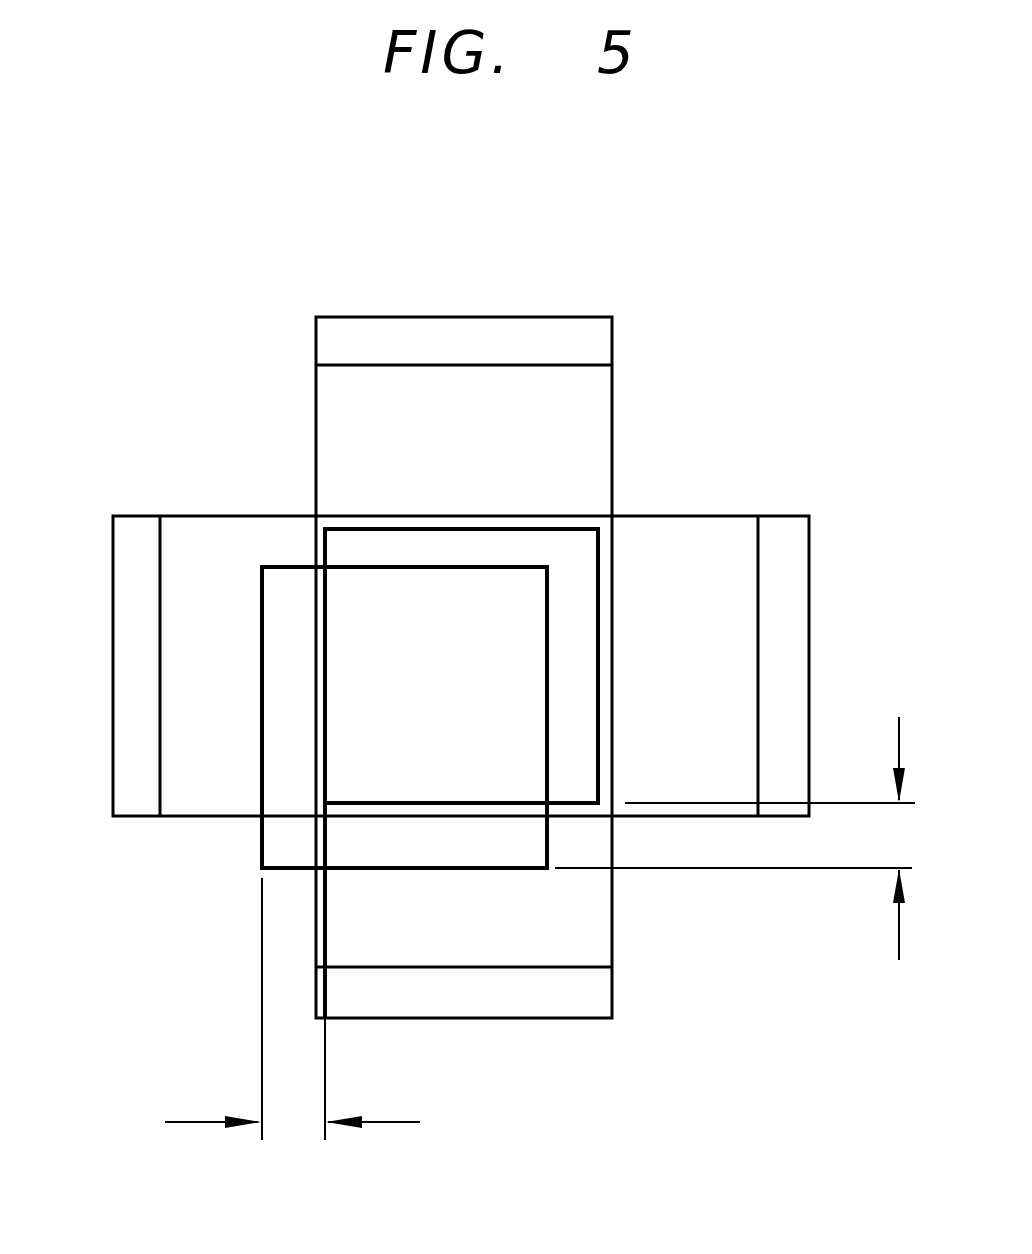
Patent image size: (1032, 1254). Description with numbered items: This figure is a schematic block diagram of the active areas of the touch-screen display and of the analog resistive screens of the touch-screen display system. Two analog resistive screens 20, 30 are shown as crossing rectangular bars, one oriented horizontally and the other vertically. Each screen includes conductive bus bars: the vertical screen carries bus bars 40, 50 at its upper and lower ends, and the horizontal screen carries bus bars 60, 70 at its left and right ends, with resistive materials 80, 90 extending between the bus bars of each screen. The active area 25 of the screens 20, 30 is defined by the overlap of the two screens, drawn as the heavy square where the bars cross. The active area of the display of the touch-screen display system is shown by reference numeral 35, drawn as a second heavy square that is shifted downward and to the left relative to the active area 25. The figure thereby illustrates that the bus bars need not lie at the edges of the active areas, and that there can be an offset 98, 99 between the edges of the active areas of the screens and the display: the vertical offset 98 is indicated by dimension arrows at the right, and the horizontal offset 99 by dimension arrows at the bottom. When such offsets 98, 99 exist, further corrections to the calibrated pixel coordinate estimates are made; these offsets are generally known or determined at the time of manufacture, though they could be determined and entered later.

The analog resistive screen 20 is at (113, 640).
The active area of the screens 25 is at (612, 538).
The analog resistive screen 30 is at (545, 312).
The active area of the display 35 is at (262, 842).
The conductive bus bar 40 is at (595, 337).
The conductive bus bar 50 is at (515, 990).
The conductive bus bar 60 is at (135, 530).
The conductive bus bar 70 is at (797, 645).
The resistive material 80 is at (215, 548).
The resistive material 90 is at (338, 408).
The offset 98 is at (735, 838).
The offset 99 is at (292, 1010).